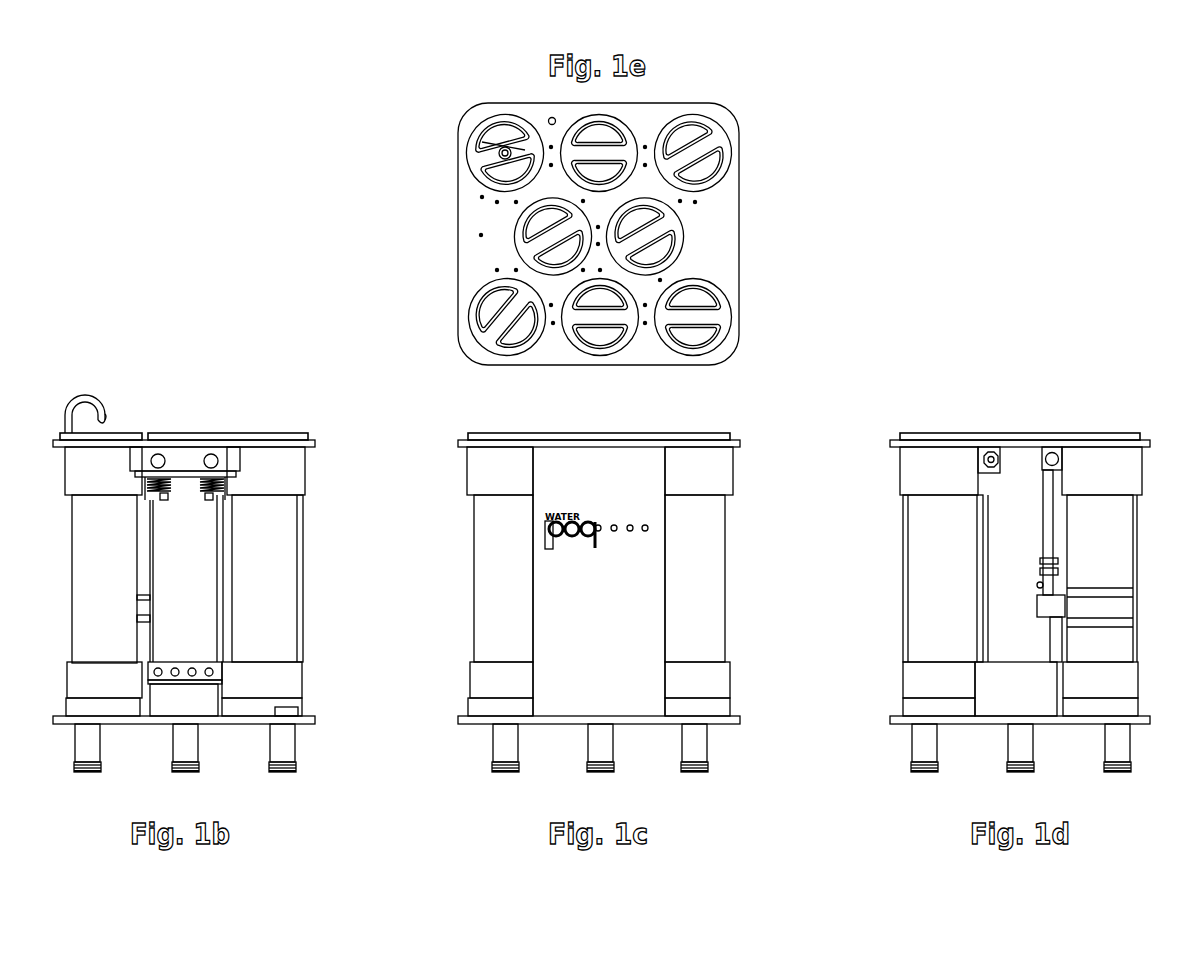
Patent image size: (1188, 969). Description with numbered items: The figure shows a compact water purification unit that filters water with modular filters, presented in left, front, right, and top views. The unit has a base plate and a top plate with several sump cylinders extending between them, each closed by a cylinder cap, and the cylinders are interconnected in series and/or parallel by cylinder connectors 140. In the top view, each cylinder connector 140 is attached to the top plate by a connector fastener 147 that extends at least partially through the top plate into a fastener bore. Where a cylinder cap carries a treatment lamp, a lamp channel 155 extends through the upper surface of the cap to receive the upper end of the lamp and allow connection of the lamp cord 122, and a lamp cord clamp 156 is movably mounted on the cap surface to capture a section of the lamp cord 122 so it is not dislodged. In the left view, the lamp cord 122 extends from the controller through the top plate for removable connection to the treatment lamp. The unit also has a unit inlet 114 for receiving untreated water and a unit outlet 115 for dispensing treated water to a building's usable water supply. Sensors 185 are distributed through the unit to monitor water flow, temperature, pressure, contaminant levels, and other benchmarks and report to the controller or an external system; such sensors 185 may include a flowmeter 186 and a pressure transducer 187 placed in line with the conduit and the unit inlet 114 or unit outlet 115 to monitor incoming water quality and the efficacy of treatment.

In FIG. 1B, the unit inlet 114 is at (216, 454).
In FIG. 1B, the unit outlet 115 is at (161, 454).
In FIG. 1B, the lamp cord 122 is at (82, 392).
In FIG. 1D, the cylinder connector 140 is at (1060, 448).
In FIG. 1E, the connector fastener 147 is at (680, 268).
In FIG. 1E, the lamp channel 155 is at (503, 150).
In FIG. 1E, the lamp cord clamp 156 is at (498, 153).
In FIG. 1B, the sensor 185 is at (300, 712).
In FIG. 1D, the flowmeter 186 is at (1056, 606).
In FIG. 1D, the pressure transducer 187 is at (995, 455).